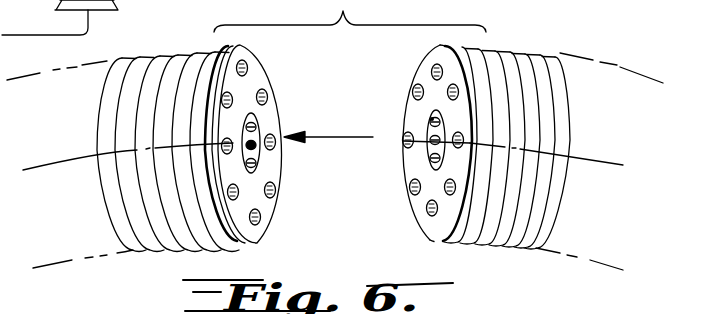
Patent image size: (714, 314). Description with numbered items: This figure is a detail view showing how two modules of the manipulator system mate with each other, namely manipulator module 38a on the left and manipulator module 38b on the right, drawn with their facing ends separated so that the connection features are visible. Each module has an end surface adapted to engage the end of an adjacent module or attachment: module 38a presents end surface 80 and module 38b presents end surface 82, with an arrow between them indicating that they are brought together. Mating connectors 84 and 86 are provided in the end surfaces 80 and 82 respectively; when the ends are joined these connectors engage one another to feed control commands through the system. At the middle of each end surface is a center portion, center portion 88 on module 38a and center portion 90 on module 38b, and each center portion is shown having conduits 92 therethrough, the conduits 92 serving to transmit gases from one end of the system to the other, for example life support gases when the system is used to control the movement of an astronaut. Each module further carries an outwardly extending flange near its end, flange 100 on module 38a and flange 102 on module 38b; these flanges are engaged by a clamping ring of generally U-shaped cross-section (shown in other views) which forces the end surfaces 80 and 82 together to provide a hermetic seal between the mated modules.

The manipulator module 38a is at (68, 260).
The manipulator module 38b is at (613, 267).
The end surface 80 is at (270, 112).
The end surface 82 is at (407, 104).
The mating connector 84 is at (271, 198).
The mating connector 86 is at (430, 208).
The center portion 88 is at (257, 166).
The center portion 90 is at (426, 152).
The conduit 92 is at (258, 147).
The outwardly extending flange 100 is at (268, 137).
The outwardly extending flange 102 is at (464, 133).